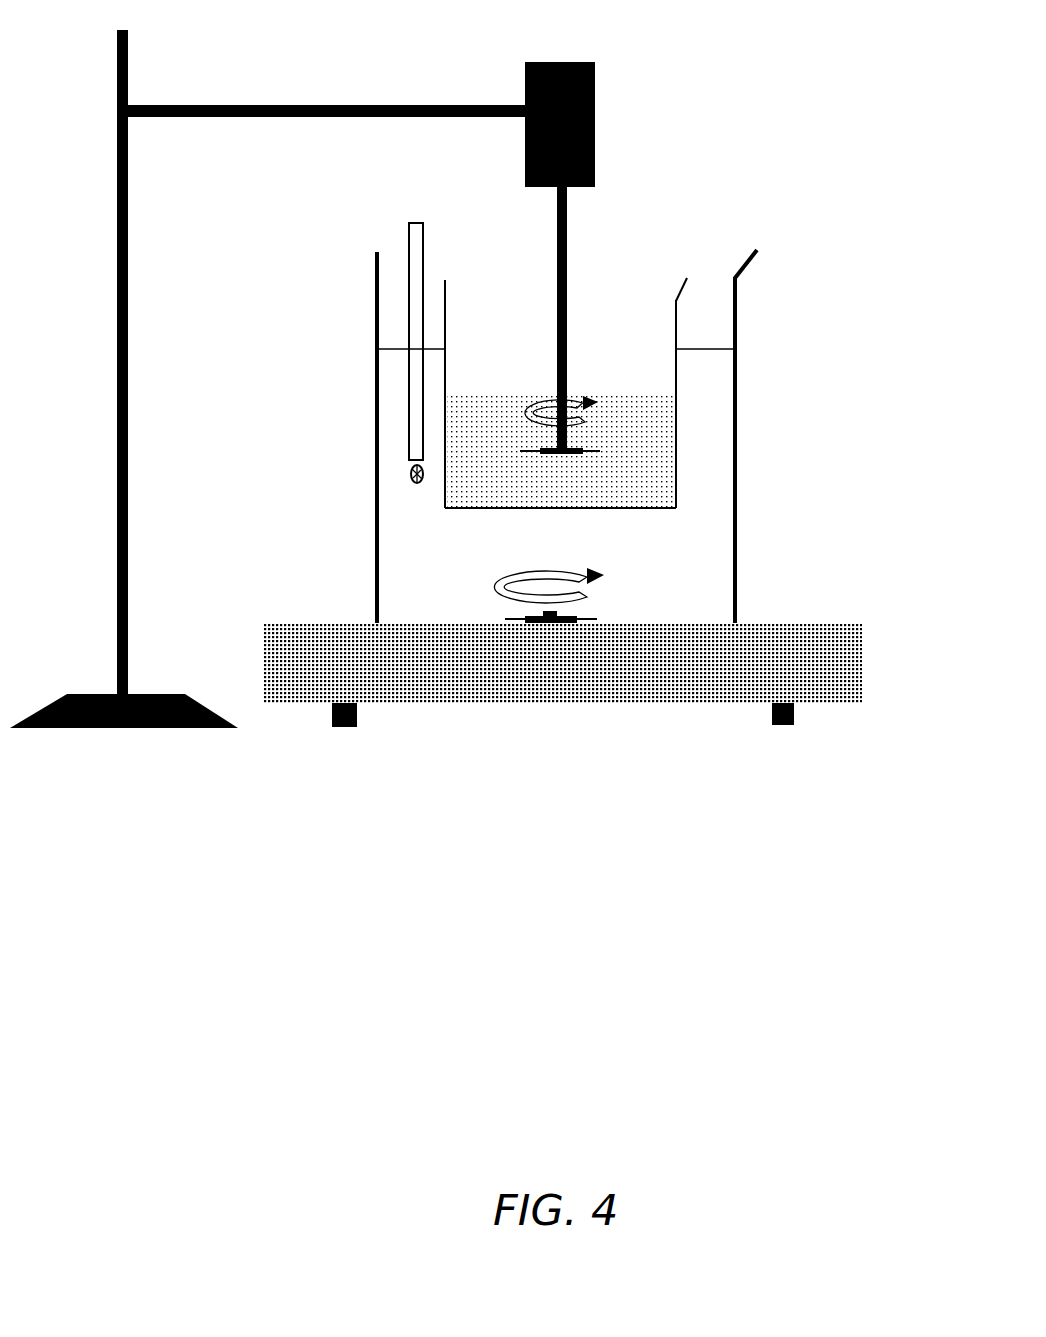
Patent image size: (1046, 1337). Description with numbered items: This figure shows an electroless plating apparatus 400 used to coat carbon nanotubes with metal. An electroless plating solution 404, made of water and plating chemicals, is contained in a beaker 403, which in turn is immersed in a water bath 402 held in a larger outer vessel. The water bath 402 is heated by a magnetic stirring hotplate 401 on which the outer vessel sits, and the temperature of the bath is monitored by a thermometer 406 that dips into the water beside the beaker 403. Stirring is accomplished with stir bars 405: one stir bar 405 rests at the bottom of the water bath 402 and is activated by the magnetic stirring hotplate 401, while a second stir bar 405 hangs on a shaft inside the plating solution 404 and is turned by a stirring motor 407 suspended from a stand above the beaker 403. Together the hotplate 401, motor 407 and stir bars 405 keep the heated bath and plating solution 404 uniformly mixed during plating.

The electroless plating apparatus 400 is at (368, 828).
The magnetic stirring hotplate 401 is at (605, 714).
The water bath 402 is at (722, 431).
The beaker 403 is at (683, 320).
The electroless plating solution 404 is at (645, 466).
The stir bars 405 is at (518, 471).
The thermometer 406 is at (400, 249).
The stirring motor 407 is at (606, 96).